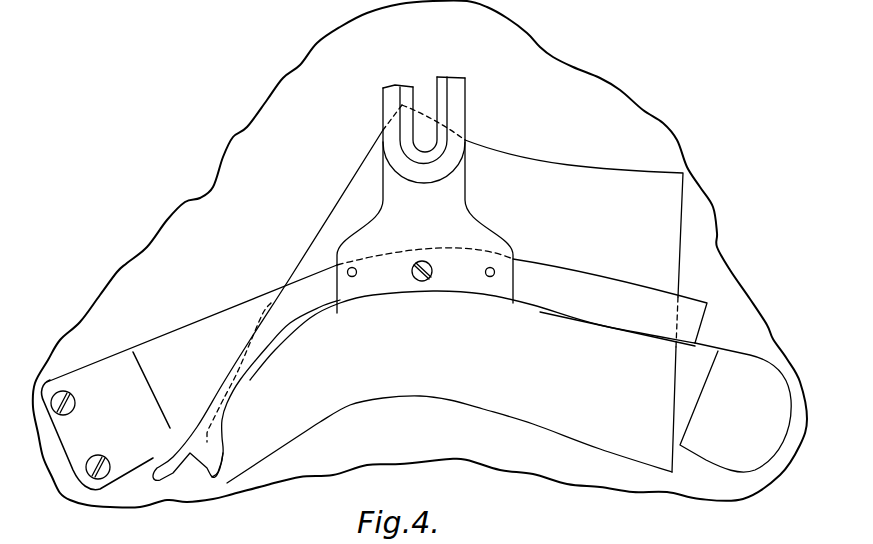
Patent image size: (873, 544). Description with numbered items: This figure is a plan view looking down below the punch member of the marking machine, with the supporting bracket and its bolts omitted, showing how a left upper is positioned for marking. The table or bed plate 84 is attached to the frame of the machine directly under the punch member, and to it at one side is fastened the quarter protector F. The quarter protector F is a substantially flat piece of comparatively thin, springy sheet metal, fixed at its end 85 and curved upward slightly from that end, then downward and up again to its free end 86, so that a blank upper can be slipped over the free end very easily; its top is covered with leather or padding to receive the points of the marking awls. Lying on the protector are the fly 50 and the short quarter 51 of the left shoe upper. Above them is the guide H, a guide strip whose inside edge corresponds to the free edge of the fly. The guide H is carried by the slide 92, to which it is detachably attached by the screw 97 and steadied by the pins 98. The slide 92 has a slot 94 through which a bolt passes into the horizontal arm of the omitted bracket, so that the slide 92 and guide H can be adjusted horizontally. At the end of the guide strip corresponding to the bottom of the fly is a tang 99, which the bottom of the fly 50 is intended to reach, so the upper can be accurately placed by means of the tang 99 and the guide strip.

The fly 50 is at (493, 401).
The short quarter 51 is at (542, 288).
The table or bed plate 84 is at (203, 494).
The fixed end of quarter protector 85 is at (87, 379).
The free end of quarter protector 86 is at (735, 407).
The slide 92 is at (383, 180).
The slot 94 is at (432, 97).
The screw 97 is at (418, 261).
The pins 98 is at (486, 276).
The tang 99 is at (204, 456).
The quarter protector F is at (153, 350).
The guide H is at (551, 275).